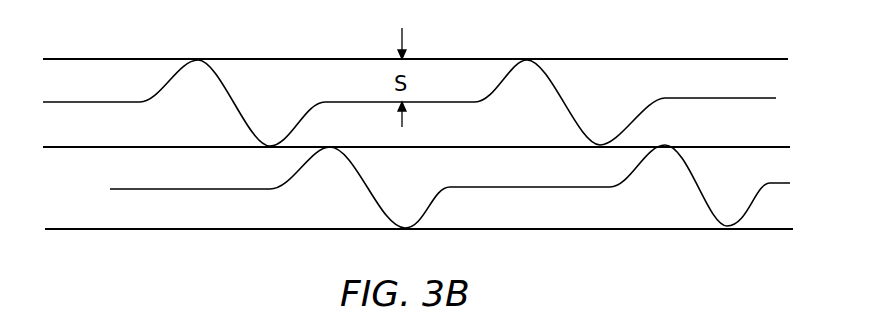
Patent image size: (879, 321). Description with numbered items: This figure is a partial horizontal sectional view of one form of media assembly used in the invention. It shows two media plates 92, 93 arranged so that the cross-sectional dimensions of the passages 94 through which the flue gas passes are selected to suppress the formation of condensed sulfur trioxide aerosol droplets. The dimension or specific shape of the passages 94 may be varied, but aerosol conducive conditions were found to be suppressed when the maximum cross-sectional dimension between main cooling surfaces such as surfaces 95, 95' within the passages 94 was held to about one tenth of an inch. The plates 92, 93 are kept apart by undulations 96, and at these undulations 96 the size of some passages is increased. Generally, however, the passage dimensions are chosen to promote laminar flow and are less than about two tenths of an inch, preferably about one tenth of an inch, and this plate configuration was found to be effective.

The media plate 92 is at (78, 100).
The media plate 93 is at (120, 58).
The passage 94 is at (268, 78).
The main cooling surface 95 is at (455, 123).
The main cooling surface 95' is at (451, 90).
The undulation 96 is at (355, 172).